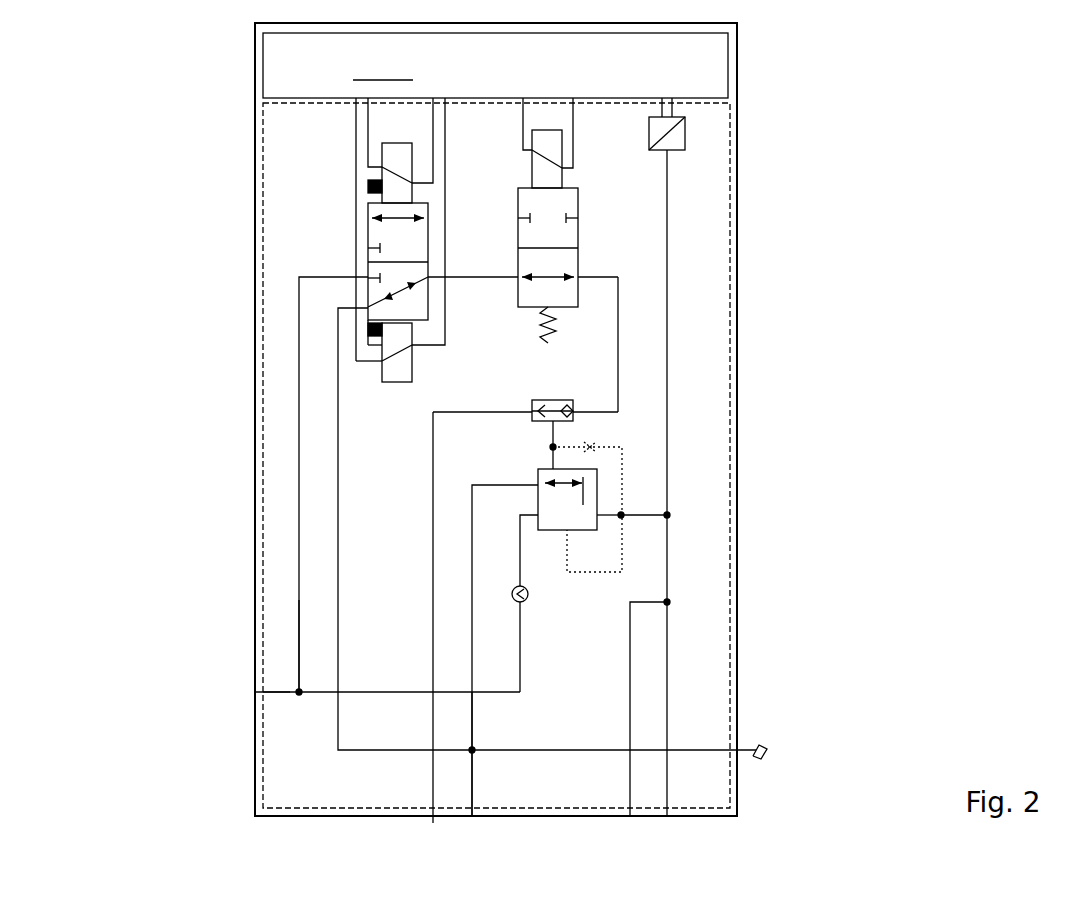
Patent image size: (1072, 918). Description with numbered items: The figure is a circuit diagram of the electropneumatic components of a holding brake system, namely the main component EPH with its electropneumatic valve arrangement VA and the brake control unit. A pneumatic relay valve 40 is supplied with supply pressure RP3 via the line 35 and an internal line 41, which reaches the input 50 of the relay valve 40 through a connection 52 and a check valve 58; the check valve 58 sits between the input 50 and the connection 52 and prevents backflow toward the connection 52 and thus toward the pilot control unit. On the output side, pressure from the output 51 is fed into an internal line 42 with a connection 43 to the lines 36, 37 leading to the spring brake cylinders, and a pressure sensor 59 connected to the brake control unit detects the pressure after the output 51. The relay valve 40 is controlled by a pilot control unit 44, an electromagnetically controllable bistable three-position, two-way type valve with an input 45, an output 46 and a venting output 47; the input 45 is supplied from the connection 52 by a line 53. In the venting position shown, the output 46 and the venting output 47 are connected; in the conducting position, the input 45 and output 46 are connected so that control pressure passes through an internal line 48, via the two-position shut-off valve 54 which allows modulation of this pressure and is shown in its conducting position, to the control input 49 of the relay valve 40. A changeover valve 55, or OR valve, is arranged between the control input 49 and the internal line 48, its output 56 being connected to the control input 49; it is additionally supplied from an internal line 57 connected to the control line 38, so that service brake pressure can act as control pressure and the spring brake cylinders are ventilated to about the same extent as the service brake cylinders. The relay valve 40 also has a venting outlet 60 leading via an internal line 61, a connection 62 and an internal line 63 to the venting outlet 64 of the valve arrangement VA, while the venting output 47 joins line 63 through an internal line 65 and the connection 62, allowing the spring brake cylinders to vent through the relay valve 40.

The line 35 is at (255, 693).
The line 36 is at (628, 822).
The line 37 is at (667, 822).
The control line 38 is at (432, 825).
The pneumatic relay valve 40 is at (603, 493).
The internal line 41 is at (368, 693).
The internal line 42 is at (667, 516).
The connection 43 is at (643, 516).
The pilot control unit 44 is at (343, 200).
The input 45 is at (357, 275).
The output 46 is at (457, 278).
The venting output 47 is at (367, 308).
The internal line 48 is at (620, 313).
The control input 49 is at (555, 465).
The input 50 is at (527, 517).
The output 51 is at (603, 516).
The connection 52 is at (300, 693).
The line 53 is at (299, 420).
The 2/2-way valve 54 is at (596, 228).
The changeover valve 55 is at (590, 402).
The output 56 is at (553, 433).
The internal line 57 is at (433, 585).
The check valve 58 is at (490, 599).
The pressure sensor 59 is at (693, 133).
The venting outlet 60 is at (532, 483).
The internal line 61 is at (470, 712).
The connection 62 is at (472, 753).
The internal line 63 is at (558, 752).
The venting outlet 64 is at (763, 752).
The internal line 65 is at (338, 393).
The main component EPH is at (253, 190).
The electropneumatic valve arrangement VA is at (253, 180).
The supply pressure RP3 is at (282, 693).